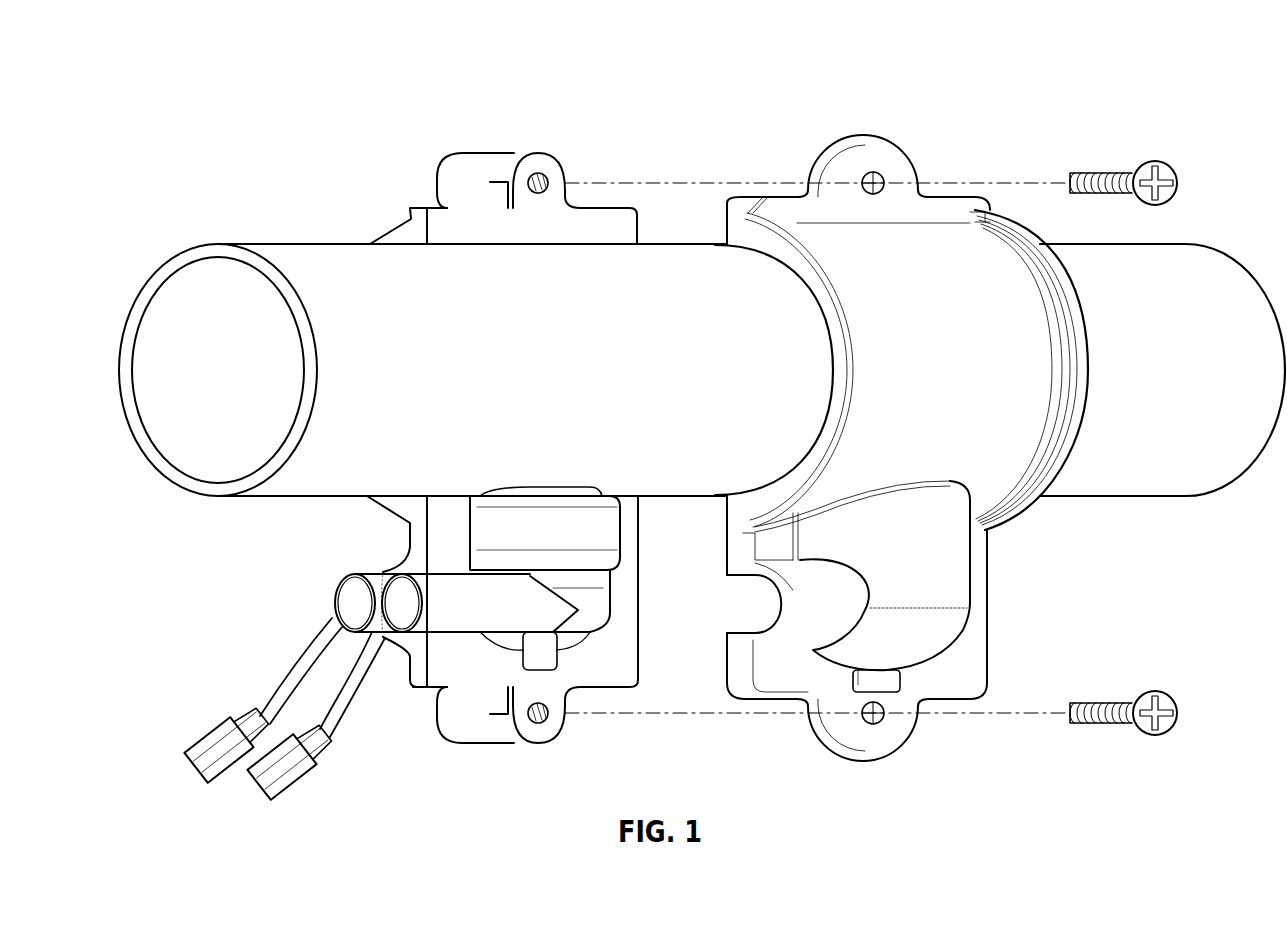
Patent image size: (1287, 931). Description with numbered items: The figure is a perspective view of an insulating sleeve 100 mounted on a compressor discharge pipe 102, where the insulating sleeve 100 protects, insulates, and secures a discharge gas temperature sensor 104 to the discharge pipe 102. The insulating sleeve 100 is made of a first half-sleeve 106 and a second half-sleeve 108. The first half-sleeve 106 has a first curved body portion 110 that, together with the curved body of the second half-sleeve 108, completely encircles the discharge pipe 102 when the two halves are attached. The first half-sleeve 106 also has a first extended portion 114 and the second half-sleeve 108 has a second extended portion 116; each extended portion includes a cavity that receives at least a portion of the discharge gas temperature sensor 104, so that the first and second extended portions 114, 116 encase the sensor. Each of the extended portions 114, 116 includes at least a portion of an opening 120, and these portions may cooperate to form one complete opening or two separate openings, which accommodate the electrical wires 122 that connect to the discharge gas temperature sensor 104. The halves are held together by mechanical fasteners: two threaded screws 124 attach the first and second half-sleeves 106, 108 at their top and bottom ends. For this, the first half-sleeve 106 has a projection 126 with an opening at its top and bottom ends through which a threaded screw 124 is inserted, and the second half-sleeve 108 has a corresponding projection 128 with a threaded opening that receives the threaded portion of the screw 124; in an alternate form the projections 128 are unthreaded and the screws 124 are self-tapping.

The insulating sleeve 100 is at (680, 412).
The compressor discharge pipe 102 is at (280, 243).
The discharge gas temperature sensor 104 is at (613, 537).
The first half-sleeve 106 is at (987, 567).
The second half-sleeve 108 is at (538, 162).
The first curved body portion 110 is at (1050, 372).
The first extended portion 114 is at (987, 637).
The second extended portion 116 is at (438, 680).
The opening 120 is at (735, 611).
The electrical wires 122 is at (352, 680).
The threaded screws 124 is at (1103, 172).
The projection 126 is at (825, 162).
The corresponding projection 128 is at (457, 162).